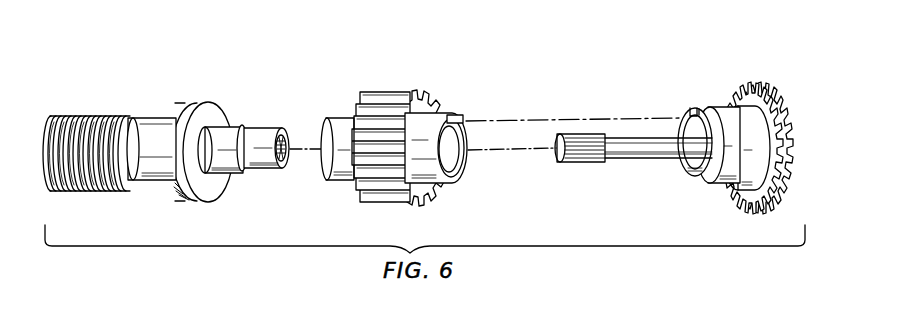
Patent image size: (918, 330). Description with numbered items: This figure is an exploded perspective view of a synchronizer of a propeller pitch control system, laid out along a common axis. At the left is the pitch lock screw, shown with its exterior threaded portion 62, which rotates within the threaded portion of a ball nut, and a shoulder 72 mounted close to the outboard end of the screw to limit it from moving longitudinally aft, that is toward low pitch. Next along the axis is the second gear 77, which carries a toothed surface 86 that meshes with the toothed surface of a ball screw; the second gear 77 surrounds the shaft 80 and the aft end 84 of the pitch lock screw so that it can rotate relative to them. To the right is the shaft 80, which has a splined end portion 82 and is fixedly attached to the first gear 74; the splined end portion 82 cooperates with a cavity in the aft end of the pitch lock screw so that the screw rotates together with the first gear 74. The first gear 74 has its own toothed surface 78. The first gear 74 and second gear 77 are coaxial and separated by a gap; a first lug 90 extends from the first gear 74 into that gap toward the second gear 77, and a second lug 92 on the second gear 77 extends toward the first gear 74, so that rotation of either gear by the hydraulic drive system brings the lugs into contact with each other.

The threaded portion 62 is at (107, 115).
The shoulder 72 is at (204, 103).
The splined end portion 82 is at (287, 163).
The aft end 84 is at (295, 102).
The toothed surface 86 is at (408, 92).
The second gear 77 is at (430, 190).
The second lug 92 is at (460, 120).
The shaft 80 is at (640, 157).
The toothed surface 78 is at (762, 88).
The first gear 74 is at (737, 210).
The first lug 90 is at (704, 115).